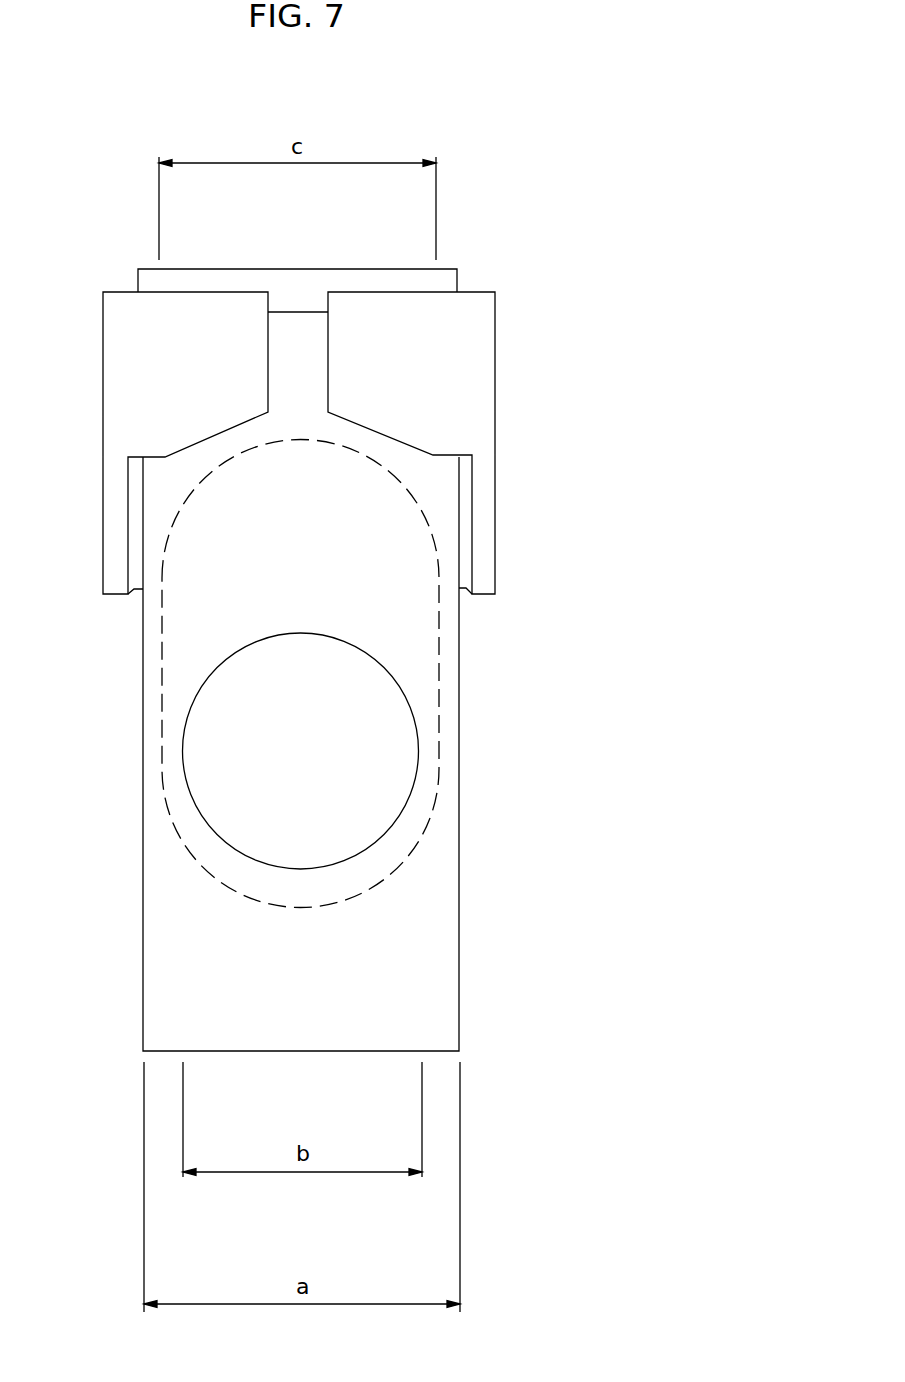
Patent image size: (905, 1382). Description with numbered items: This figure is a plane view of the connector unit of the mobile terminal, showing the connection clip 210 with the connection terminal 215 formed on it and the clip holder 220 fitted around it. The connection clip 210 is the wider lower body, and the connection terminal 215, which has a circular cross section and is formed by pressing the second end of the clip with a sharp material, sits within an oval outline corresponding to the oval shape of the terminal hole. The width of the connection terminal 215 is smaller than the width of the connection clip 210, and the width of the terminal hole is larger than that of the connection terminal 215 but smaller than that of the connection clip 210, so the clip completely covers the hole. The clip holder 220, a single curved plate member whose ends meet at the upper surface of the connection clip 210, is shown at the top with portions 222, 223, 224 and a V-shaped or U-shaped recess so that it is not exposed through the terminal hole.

The connection clip 210 is at (428, 892).
The connection terminal 215 is at (378, 743).
The clip holder 220 is at (310, 383).
The connecting plate 222 is at (195, 326).
The right side portion 223 is at (495, 426).
The left side portion 224 is at (103, 428).